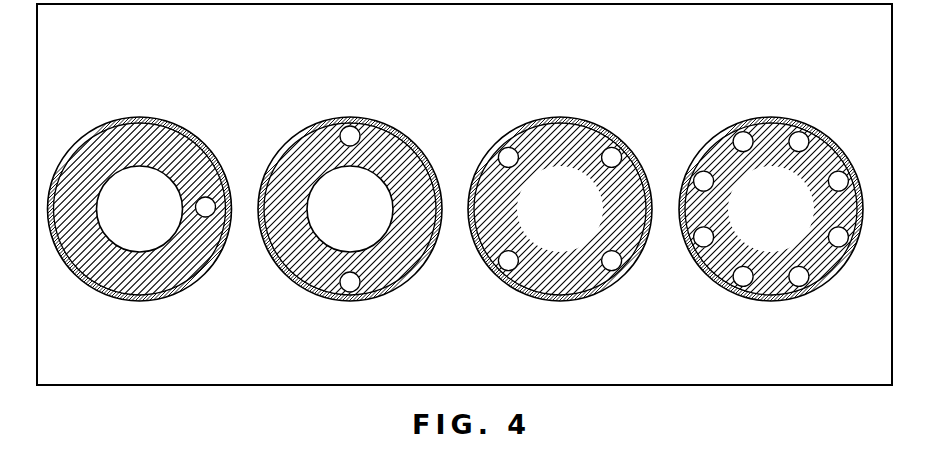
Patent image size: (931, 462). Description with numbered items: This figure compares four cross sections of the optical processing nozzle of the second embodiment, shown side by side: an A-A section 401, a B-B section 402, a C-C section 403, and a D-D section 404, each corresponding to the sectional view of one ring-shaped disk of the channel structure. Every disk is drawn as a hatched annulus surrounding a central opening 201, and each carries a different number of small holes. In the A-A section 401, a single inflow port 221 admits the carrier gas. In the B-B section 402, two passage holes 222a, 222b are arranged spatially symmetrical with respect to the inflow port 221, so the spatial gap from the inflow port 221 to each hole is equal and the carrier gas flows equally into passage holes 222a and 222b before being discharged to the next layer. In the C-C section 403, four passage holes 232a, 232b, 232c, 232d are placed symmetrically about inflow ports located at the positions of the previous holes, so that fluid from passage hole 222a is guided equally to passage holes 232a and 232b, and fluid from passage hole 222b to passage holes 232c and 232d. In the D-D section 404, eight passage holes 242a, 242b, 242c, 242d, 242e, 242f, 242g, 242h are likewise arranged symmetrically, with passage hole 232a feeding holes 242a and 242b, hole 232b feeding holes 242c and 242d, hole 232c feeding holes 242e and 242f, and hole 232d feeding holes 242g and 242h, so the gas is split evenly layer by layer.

The A-A section 401 is at (95, 86).
The B-B section 402 is at (315, 86).
The C-C section 403 is at (544, 86).
The D-D section 404 is at (697, 86).
The central opening 201 is at (97, 208).
The inflow port 221 is at (205, 207).
The passage hole 222a is at (350, 134).
The passage hole 222b is at (350, 282).
The passage hole 232a is at (507, 157).
The passage hole 232b is at (612, 157).
The passage hole 232c is at (612, 261).
The passage hole 232d is at (508, 261).
The passage hole 242a is at (704, 181).
The passage hole 242b is at (743, 142).
The passage hole 242c is at (799, 142).
The passage hole 242d is at (838, 181).
The passage hole 242e is at (838, 237).
The passage hole 242f is at (799, 277).
The passage hole 242g is at (743, 277).
The passage hole 242h is at (704, 237).